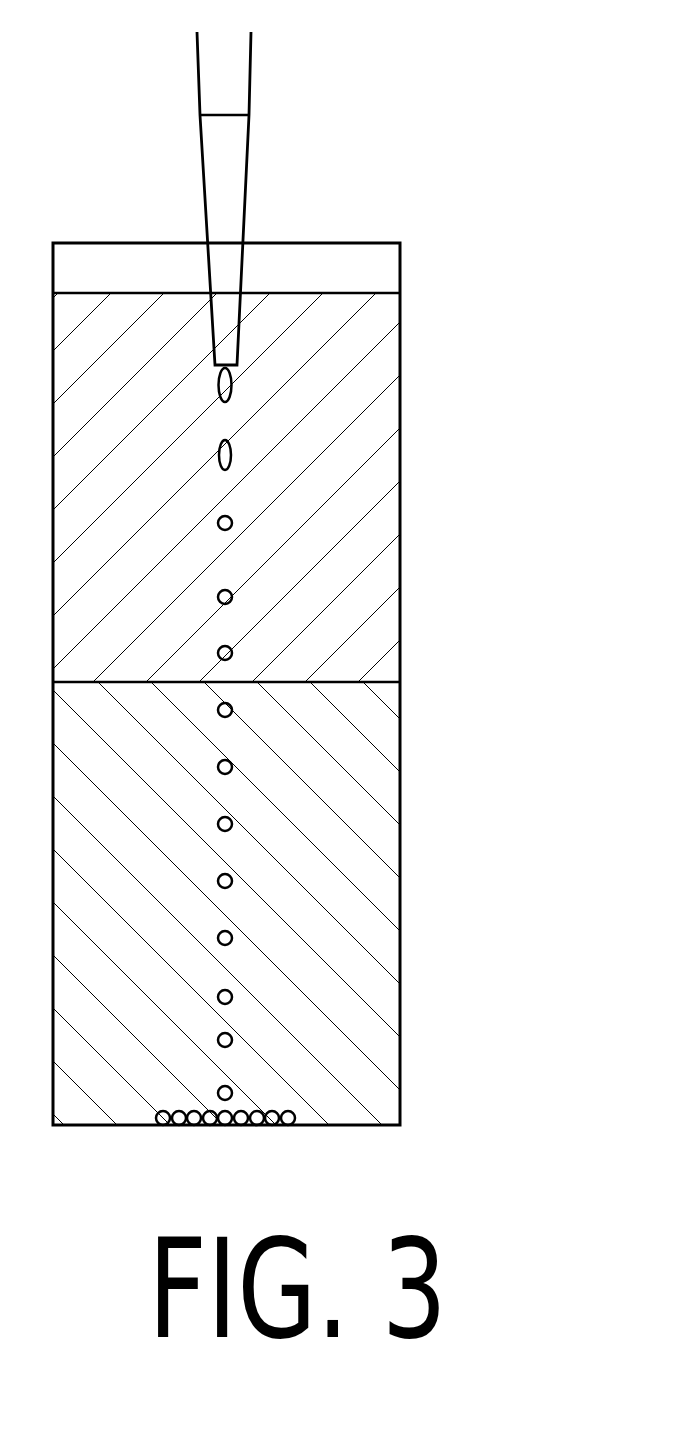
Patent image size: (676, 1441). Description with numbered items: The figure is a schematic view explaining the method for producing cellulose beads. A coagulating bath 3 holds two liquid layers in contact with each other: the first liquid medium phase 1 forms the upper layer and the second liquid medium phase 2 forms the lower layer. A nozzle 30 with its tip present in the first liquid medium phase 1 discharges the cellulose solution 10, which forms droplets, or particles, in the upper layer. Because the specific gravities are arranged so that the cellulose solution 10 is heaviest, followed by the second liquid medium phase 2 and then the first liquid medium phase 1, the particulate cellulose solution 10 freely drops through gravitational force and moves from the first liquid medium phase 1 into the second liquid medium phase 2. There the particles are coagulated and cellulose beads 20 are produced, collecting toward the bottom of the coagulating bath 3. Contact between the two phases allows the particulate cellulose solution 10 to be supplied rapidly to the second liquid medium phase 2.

The first liquid medium phase 1 is at (400, 452).
The second liquid medium phase 2 is at (400, 905).
The coagulating bath 3 is at (422, 207).
The cellulose solution 10 is at (233, 527).
The cellulose beads 20 is at (233, 998).
The dropping nozzle (pipette) 30 is at (253, 158).